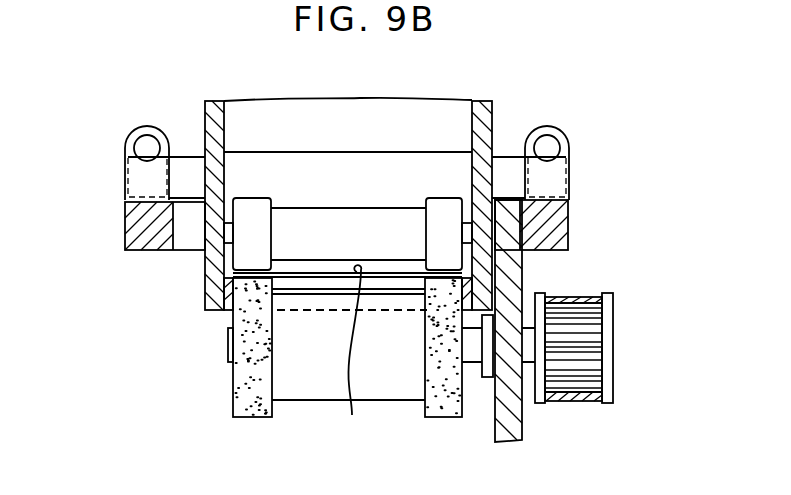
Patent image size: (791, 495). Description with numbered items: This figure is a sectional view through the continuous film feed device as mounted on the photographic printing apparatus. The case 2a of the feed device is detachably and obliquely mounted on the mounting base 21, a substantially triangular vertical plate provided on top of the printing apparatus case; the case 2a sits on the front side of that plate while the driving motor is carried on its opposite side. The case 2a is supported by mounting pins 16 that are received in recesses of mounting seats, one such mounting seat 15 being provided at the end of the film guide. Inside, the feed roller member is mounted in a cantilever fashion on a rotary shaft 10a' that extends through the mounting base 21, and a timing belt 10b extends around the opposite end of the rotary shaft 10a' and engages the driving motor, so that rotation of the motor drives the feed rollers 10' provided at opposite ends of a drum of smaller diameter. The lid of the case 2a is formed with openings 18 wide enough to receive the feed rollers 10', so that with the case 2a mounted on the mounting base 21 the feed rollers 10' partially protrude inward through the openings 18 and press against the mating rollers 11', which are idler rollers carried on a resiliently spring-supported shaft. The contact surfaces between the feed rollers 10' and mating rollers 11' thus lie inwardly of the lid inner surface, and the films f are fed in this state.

The case 2a is at (203, 120).
The mounting pin 16 is at (125, 160).
The mounting seat 15 is at (147, 243).
The mating roller 11' is at (311, 261).
The opening 18 is at (228, 312).
The rotary shaft 10a' is at (349, 365).
The feed roller 10' is at (342, 383).
The film f is at (347, 357).
The mounting base 21 is at (513, 412).
The timing belt 10b is at (577, 395).